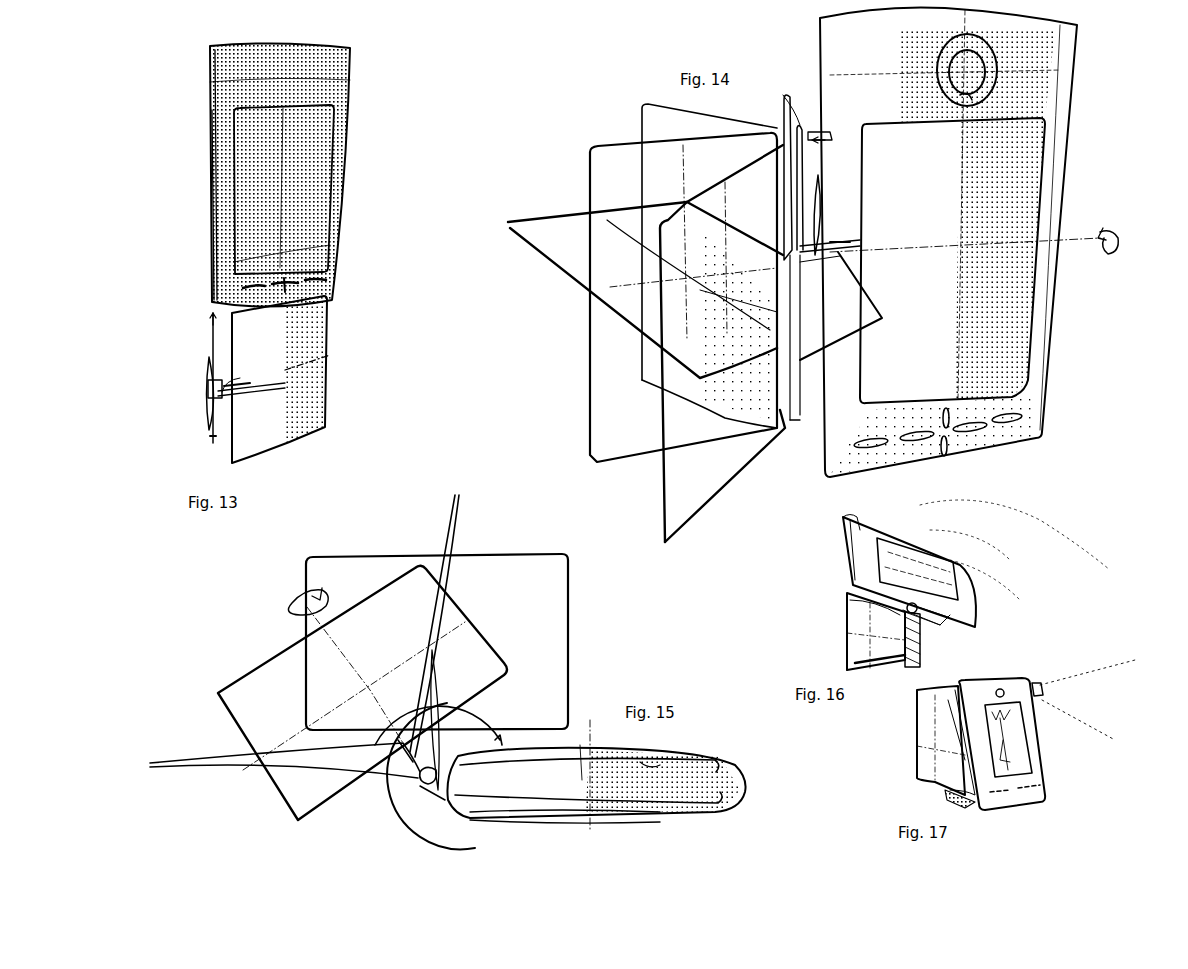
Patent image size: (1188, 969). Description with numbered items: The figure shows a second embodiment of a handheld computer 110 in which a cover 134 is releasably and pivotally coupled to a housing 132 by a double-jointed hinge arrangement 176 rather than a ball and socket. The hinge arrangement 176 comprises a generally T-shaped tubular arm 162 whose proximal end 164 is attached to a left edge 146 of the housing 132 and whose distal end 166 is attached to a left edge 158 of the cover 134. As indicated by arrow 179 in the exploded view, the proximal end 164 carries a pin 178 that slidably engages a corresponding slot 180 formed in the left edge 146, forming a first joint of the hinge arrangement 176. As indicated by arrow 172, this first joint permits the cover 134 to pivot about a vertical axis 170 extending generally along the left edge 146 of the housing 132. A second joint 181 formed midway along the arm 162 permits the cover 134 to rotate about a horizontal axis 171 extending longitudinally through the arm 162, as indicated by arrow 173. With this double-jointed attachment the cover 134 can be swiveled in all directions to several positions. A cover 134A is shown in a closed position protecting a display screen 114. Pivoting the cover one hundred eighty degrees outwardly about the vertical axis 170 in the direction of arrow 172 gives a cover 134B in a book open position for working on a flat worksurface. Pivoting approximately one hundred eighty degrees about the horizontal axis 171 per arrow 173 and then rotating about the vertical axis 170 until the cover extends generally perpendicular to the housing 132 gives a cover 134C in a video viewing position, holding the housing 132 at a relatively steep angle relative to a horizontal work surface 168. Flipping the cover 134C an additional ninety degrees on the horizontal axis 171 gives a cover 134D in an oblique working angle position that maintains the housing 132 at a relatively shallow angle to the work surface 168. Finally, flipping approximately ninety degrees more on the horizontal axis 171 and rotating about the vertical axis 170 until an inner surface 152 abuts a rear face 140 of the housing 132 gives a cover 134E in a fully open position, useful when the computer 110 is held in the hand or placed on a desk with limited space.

In FIG. 14, the handheld computer 110 is at (804, 500).
In FIG. 15, the handheld computer 110 is at (620, 650).
In FIG. 16, the handheld computer 110 is at (812, 588).
In FIG. 17, the handheld computer 110 is at (879, 761).
In FIG. 13, the display screen 114 is at (332, 195).
In FIG. 13, the housing 132 is at (356, 95).
In FIG. 15, the housing 132 is at (748, 766).
In FIG. 16, the housing 132 is at (902, 533).
In FIG. 17, the housing 132 is at (1045, 758).
In FIG. 13, the cover 134 is at (327, 404).
In FIG. 15, the cover in closed position 134A is at (665, 820).
In FIG. 15, the cover in book open position 134B is at (178, 772).
In FIG. 15, the cover in video viewing position 134C is at (460, 510).
In FIG. 17, the cover in video viewing position 134C is at (917, 722).
In FIG. 15, the cover in oblique working angle position 134D is at (568, 580).
In FIG. 16, the cover in oblique working angle position 134D is at (847, 638).
In FIG. 15, the cover in fully open position 134E is at (700, 745).
In FIG. 15, the rear face 140 is at (572, 745).
In FIG. 13, the left edge 146 is at (209, 86).
In FIG. 15, the inner surface 152 is at (640, 760).
In FIG. 13, the left edge 158 is at (232, 450).
In FIG. 13, the arm 162 is at (226, 372).
In FIG. 14, the arm 162 is at (850, 240).
In FIG. 13, the proximal end 164 is at (210, 390).
In FIG. 14, the proximal end 164 is at (830, 215).
In FIG. 13, the distal end 166 is at (228, 378).
In FIG. 14, the distal end 166 is at (875, 242).
In FIG. 16, the horizontal work surface 168 is at (925, 650).
In FIG. 17, the horizontal work surface 168 is at (948, 804).
In FIG. 14, the vertical axis 170 is at (812, 438).
In FIG. 15, the vertical axis 170 is at (420, 785).
In FIG. 13, the horizontal axis 171 is at (360, 346).
In FIG. 14, the horizontal axis 171 is at (1082, 250).
In FIG. 15, the horizontal axis 171 is at (345, 648).
In FIG. 14, the arrow 172 is at (828, 135).
In FIG. 15, the arrow 172 is at (385, 840).
In FIG. 14, the arrow 173 is at (1112, 222).
In FIG. 15, the arrow 173 is at (292, 592).
In FIG. 13, the double-jointed hinge arrangement 176 is at (186, 404).
In FIG. 13, the pin 178 is at (212, 440).
In FIG. 13, the arrow 179 is at (210, 322).
In FIG. 13, the slot 180 is at (208, 258).
In FIG. 13, the second joint 181 is at (228, 396).
In FIG. 14, the second joint 181 is at (860, 276).